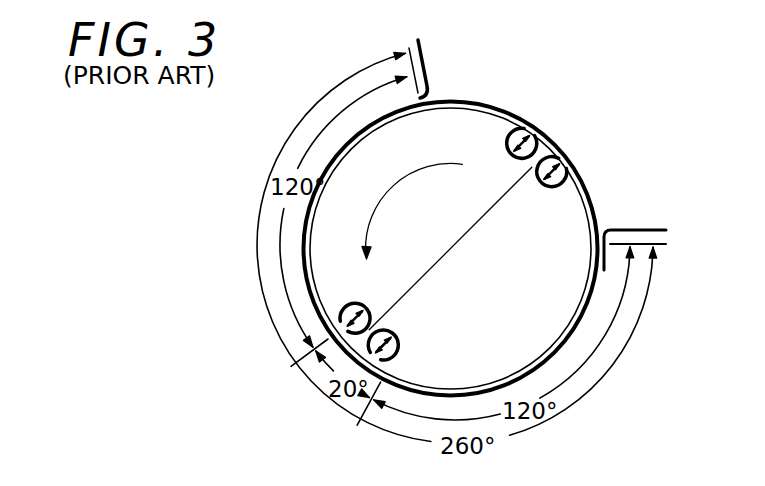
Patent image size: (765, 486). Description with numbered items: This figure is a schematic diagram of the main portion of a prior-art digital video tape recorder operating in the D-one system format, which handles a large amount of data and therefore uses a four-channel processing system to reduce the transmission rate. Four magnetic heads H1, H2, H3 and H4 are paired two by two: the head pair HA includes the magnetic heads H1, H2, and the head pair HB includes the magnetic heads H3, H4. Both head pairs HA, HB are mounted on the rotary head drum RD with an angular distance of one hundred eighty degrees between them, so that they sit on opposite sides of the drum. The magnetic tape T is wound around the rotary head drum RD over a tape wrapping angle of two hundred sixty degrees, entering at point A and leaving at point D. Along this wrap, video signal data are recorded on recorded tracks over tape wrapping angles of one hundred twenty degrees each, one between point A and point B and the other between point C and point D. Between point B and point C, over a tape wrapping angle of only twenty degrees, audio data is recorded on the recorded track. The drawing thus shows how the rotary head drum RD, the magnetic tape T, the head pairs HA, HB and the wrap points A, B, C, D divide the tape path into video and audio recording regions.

The rotary head drum RD is at (596, 218).
The magnetic tape T is at (430, 76).
The point A is at (398, 52).
The point B is at (295, 363).
The point C is at (350, 418).
The point D is at (645, 250).
The head pair HA is at (264, 305).
The magnetic head H1 is at (398, 330).
The magnetic head H2 is at (343, 312).
The head pair HB is at (574, 130).
The magnetic head H3 is at (513, 126).
The magnetic head H4 is at (568, 175).